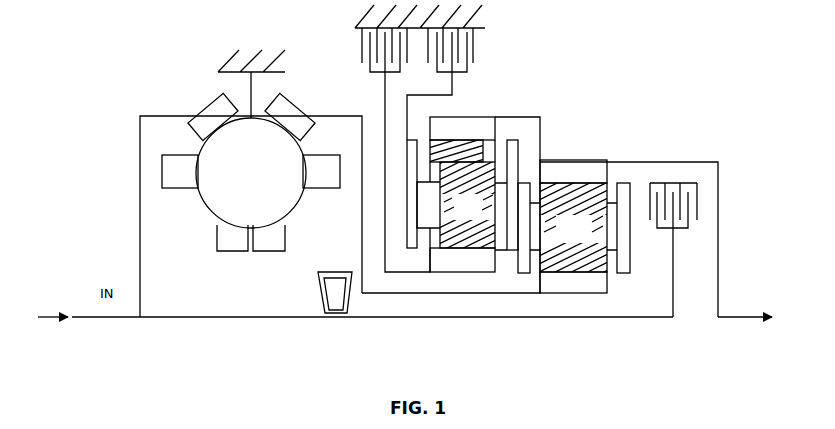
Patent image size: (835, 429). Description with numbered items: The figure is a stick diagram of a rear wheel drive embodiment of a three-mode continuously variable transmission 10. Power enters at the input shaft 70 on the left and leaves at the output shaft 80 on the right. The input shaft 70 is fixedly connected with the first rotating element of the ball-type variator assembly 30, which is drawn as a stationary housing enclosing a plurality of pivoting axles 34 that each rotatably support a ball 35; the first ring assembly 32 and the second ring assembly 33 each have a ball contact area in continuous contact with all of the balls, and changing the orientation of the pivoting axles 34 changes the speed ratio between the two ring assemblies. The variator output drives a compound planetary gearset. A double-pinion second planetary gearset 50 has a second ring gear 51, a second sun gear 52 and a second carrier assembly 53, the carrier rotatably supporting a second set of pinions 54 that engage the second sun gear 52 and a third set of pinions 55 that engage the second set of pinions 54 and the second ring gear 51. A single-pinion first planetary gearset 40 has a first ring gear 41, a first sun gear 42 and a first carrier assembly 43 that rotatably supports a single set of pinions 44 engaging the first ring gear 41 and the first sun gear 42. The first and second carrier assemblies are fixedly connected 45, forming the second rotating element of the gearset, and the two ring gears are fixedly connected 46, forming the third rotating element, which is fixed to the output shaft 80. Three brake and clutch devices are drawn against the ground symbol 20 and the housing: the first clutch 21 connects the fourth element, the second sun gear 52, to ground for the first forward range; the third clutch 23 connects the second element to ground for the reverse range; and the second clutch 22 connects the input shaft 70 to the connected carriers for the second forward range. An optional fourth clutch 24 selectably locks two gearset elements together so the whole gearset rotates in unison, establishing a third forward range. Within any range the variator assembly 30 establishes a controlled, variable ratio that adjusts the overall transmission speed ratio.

The continuously variable transmission 10 is at (622, 42).
The stationary member (ground) 20 is at (230, 58).
The first clutch 21 is at (372, 42).
The second clutch 22 is at (698, 205).
The third clutch 23 is at (472, 38).
The fourth clutch 24 is at (318, 280).
The variator assembly 30 is at (180, 76).
The first ring assembly 32 is at (210, 115).
The second ring assembly 33 is at (293, 112).
The pivoting axles 34 is at (183, 167).
The ball 35 is at (227, 197).
The first planetary gearset 40 is at (598, 136).
The first ring gear 41 is at (595, 167).
The first sun gear 42 is at (593, 288).
The first carrier assembly 43 is at (627, 257).
The first single set of pinions 44 is at (562, 262).
The fixedly connected carrier assemblies 45 is at (522, 182).
The fixedly connected ring gears 46 is at (540, 120).
The second planetary gearset 50 is at (514, 96).
The second ring gear 51 is at (460, 123).
The second sun gear 52 is at (460, 262).
The second carrier assembly 53 is at (408, 212).
The second set of pinions 54 is at (455, 232).
The third set of pinions 55 is at (460, 152).
The input shaft 70 is at (44, 317).
The output shaft 80 is at (777, 314).